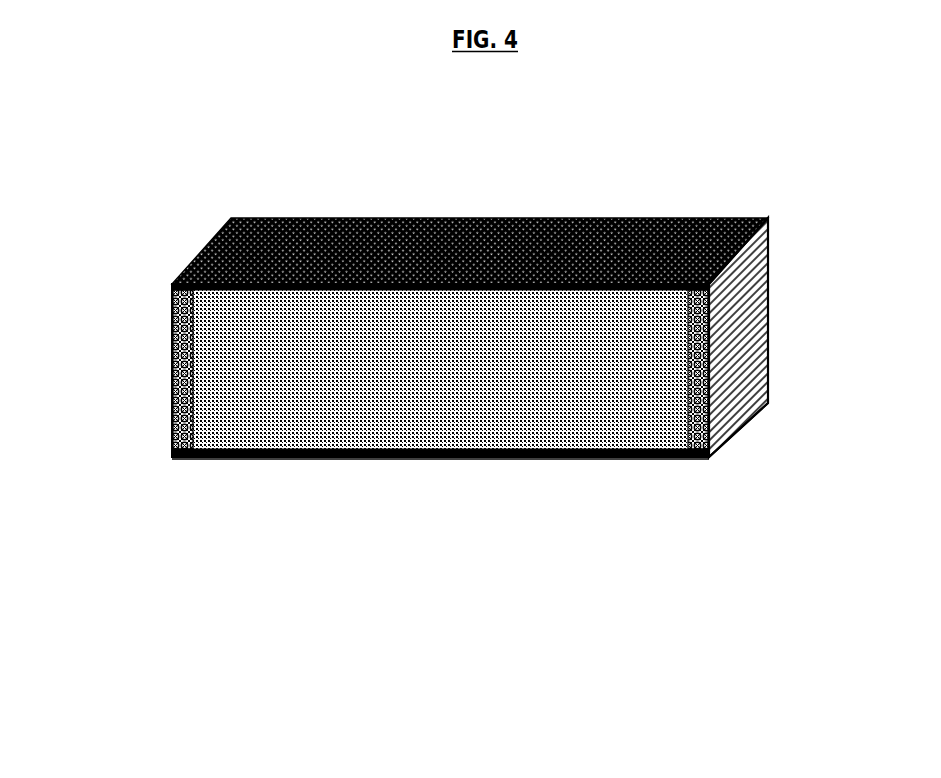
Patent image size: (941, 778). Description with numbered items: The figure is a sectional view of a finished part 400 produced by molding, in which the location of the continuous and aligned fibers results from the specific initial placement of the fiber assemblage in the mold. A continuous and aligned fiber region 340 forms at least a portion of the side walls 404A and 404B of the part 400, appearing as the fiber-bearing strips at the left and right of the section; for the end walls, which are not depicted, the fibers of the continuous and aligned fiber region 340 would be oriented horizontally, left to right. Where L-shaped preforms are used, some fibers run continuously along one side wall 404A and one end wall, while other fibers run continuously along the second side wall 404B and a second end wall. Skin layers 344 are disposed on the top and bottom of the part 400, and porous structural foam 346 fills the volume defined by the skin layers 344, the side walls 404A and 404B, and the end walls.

The finished part 400 is at (453, 316).
The skin layers 344 is at (385, 238).
The continuous and aligned fiber region 340 is at (174, 337).
The porous structural foam 346 is at (423, 375).
The side wall 404A is at (740, 340).
The side wall 404B is at (172, 372).